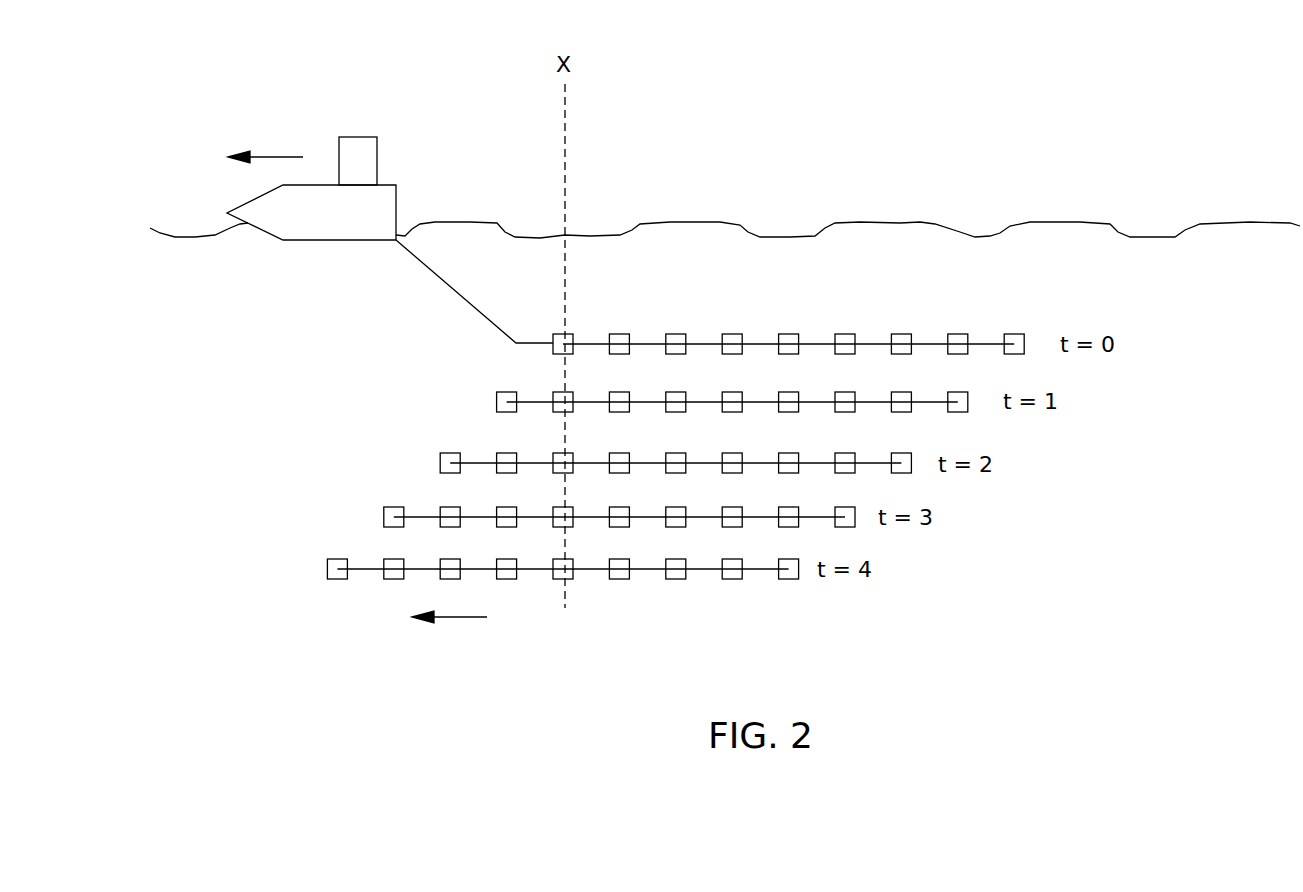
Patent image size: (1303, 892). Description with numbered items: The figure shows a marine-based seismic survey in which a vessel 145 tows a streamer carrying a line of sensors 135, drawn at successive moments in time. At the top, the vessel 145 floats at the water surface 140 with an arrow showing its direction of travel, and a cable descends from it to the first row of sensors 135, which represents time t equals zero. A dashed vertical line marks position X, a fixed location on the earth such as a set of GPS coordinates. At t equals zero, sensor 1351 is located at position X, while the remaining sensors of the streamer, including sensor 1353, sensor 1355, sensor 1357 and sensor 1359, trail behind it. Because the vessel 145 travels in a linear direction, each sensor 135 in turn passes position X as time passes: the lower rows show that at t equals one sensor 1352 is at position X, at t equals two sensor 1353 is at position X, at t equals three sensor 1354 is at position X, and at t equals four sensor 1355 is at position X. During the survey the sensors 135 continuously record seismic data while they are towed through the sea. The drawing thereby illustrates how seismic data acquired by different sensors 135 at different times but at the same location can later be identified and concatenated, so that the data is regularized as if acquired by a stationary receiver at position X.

The sensors 135 is at (716, 436).
The sensor 1351 is at (568, 333).
The sensor 1352 is at (564, 392).
The sensor 1353 is at (681, 333).
The sensor 1354 is at (564, 507).
The sensor 1355 is at (794, 333).
The sensor 1357 is at (906, 333).
The sensor 1359 is at (1019, 333).
The water surface 140 is at (1038, 222).
The vessel 145 is at (353, 137).